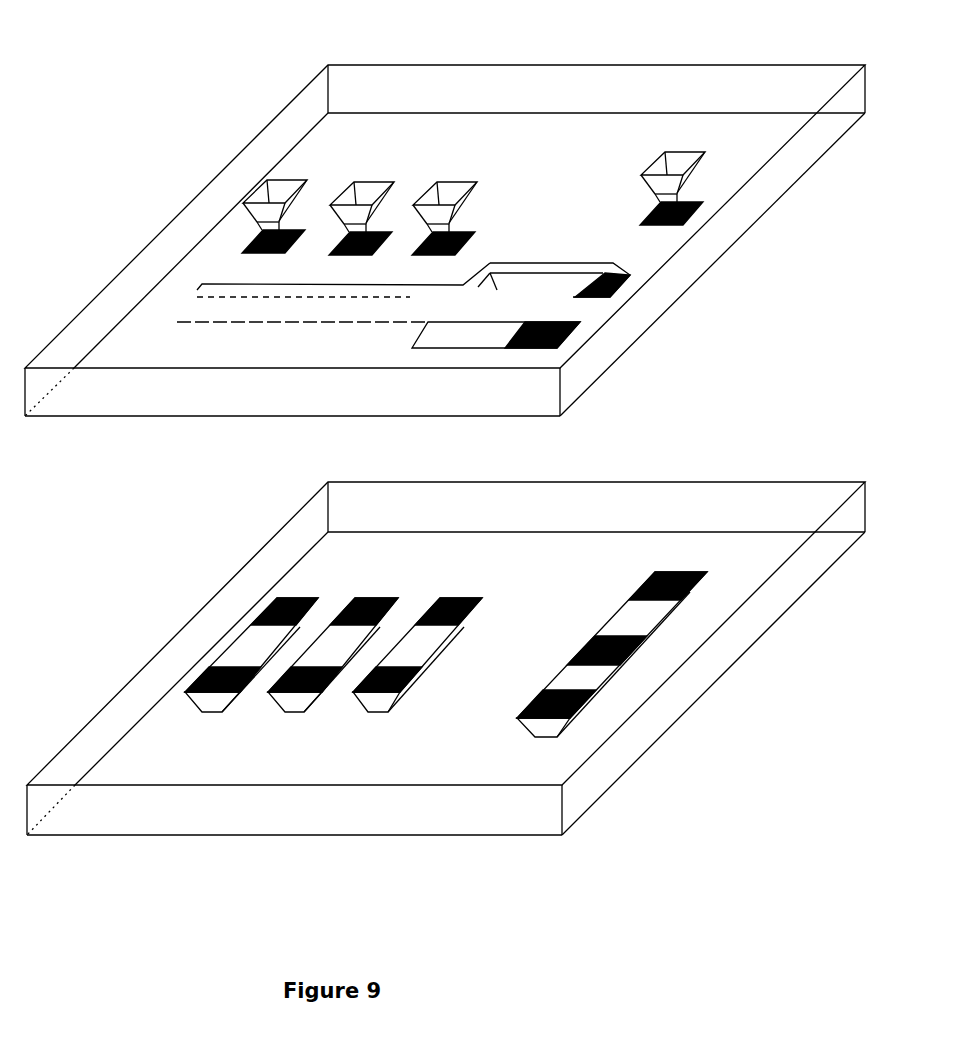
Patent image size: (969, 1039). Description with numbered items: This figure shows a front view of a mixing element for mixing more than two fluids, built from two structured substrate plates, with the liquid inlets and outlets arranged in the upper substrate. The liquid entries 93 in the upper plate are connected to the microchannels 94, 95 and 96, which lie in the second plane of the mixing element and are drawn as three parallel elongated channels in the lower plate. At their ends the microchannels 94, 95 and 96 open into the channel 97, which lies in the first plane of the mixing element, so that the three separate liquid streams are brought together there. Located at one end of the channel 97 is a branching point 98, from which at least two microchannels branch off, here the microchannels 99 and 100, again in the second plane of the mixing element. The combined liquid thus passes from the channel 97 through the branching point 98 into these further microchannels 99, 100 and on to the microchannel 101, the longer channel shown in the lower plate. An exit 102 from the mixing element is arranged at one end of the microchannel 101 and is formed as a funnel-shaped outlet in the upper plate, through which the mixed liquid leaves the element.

The liquid entries 93 is at (447, 188).
The microchannel 94 is at (202, 713).
The microchannel 95 is at (283, 713).
The microchannel 96 is at (370, 713).
The channel 97 is at (236, 281).
The branching point 98 is at (480, 268).
The microchannel 99 is at (663, 297).
The microchannel 100 is at (615, 275).
The microchannel 101 is at (627, 628).
The exit 102 is at (672, 163).